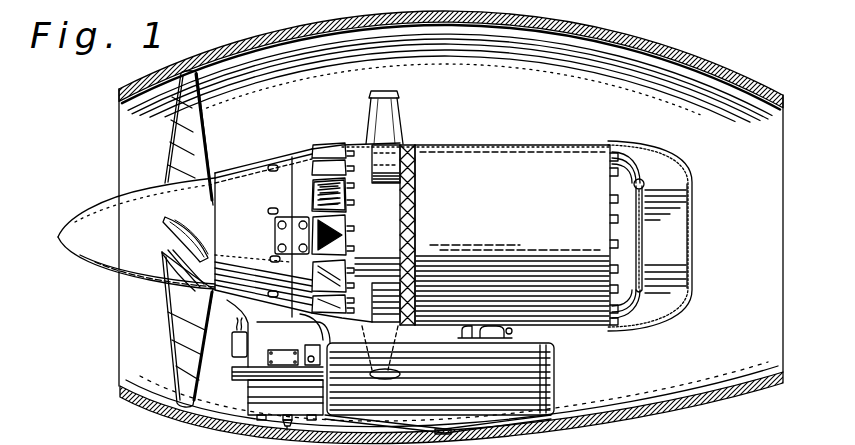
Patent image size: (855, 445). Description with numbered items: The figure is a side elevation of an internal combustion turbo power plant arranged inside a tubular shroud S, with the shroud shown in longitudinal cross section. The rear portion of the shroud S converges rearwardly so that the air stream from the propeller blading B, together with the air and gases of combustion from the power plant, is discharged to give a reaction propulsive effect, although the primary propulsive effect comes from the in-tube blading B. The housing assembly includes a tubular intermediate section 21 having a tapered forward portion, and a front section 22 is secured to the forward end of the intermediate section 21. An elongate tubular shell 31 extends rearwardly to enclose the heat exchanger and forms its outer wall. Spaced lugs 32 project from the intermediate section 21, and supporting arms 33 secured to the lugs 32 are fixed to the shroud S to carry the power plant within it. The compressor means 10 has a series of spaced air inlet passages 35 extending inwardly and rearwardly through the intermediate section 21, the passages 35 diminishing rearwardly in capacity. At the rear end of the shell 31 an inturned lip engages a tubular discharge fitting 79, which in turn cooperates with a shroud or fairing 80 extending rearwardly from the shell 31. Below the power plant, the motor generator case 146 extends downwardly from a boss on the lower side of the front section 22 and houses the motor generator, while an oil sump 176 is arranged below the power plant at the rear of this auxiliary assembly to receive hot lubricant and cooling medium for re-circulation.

The tubular shroud S is at (616, 47).
The propeller blading B is at (165, 321).
The compressor means 10 is at (330, 142).
The tubular intermediate section 21 is at (381, 243).
The front section 22 is at (247, 220).
The elongate tubular shell 31 is at (533, 223).
The spaced lugs 32 is at (398, 163).
The supporting arms 33 is at (400, 114).
The air inlet passages 35 is at (342, 203).
The tubular discharge fitting 79 is at (635, 252).
The shroud or fairing 80 is at (649, 322).
The motor generator case 146 is at (297, 343).
The oil sump 176 is at (555, 374).